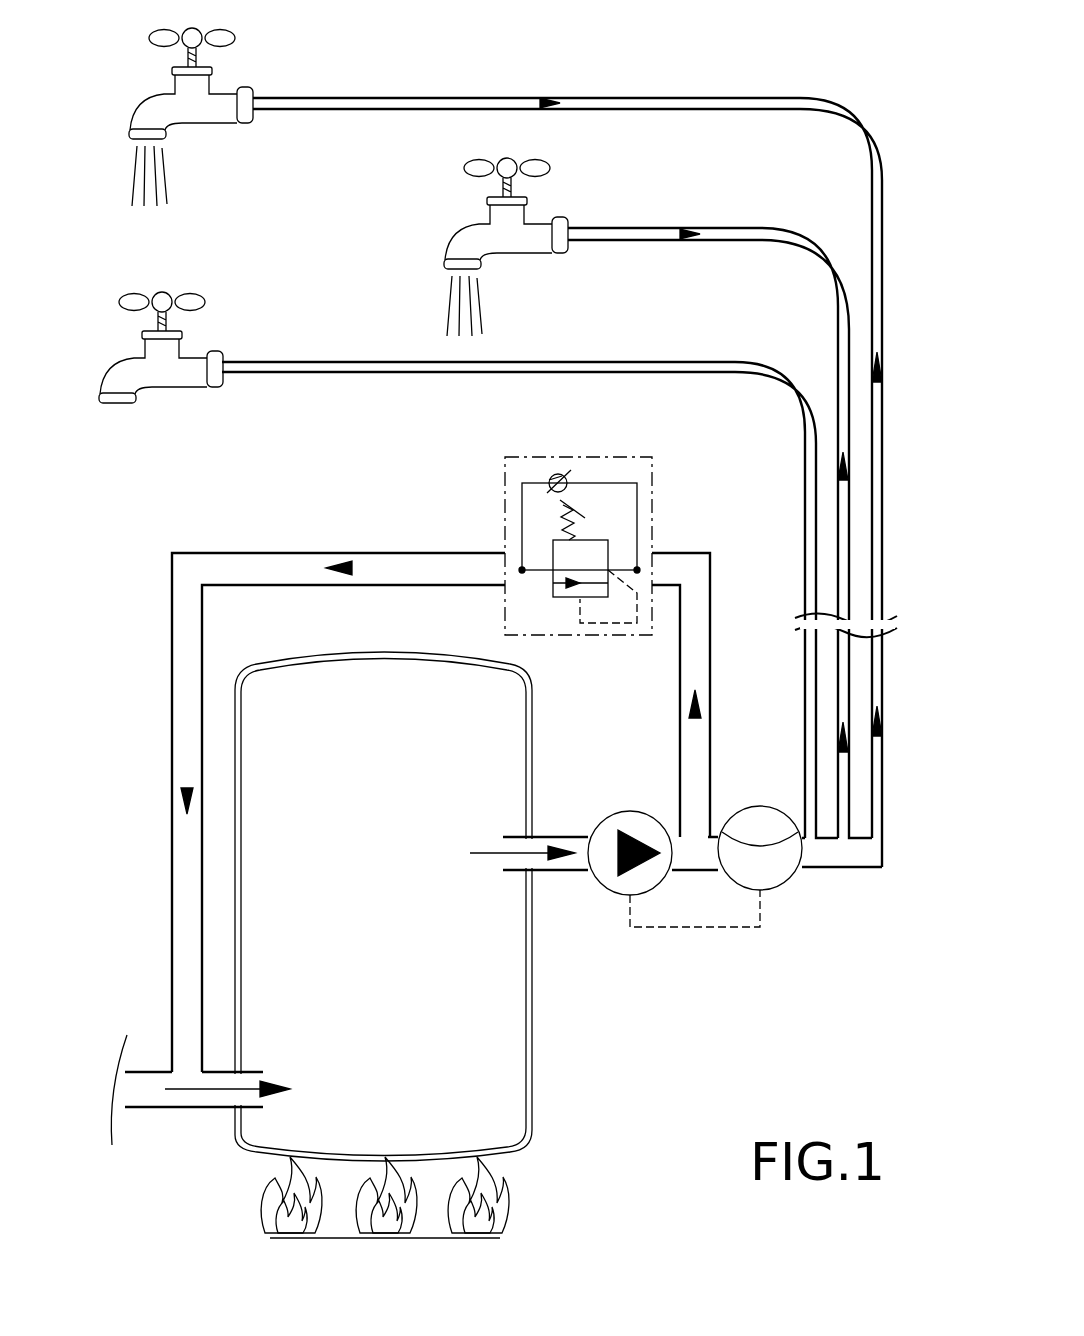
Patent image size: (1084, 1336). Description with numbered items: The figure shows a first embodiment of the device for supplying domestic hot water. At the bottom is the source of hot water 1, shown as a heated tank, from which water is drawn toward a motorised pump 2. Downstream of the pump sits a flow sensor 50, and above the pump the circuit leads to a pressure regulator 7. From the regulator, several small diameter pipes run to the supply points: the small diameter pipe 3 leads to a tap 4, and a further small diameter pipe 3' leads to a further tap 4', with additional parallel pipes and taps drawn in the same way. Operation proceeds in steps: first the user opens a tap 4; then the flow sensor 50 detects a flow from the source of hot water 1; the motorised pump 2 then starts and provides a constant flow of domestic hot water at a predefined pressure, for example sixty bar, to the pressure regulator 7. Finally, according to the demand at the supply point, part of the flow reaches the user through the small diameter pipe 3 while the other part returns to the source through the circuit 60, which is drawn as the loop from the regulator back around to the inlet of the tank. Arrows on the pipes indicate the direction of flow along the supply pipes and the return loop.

The source of hot water 1 is at (468, 1005).
The motorised pump 2 is at (629, 830).
The small diameter pipe 3 is at (530, 600).
The small diameter pipe 3' is at (720, 533).
The tap 4 is at (211, 377).
The tap 4' is at (443, 247).
The pressure regulator 7 is at (545, 546).
The flow sensor 50 is at (774, 875).
The circuit 60 is at (262, 573).